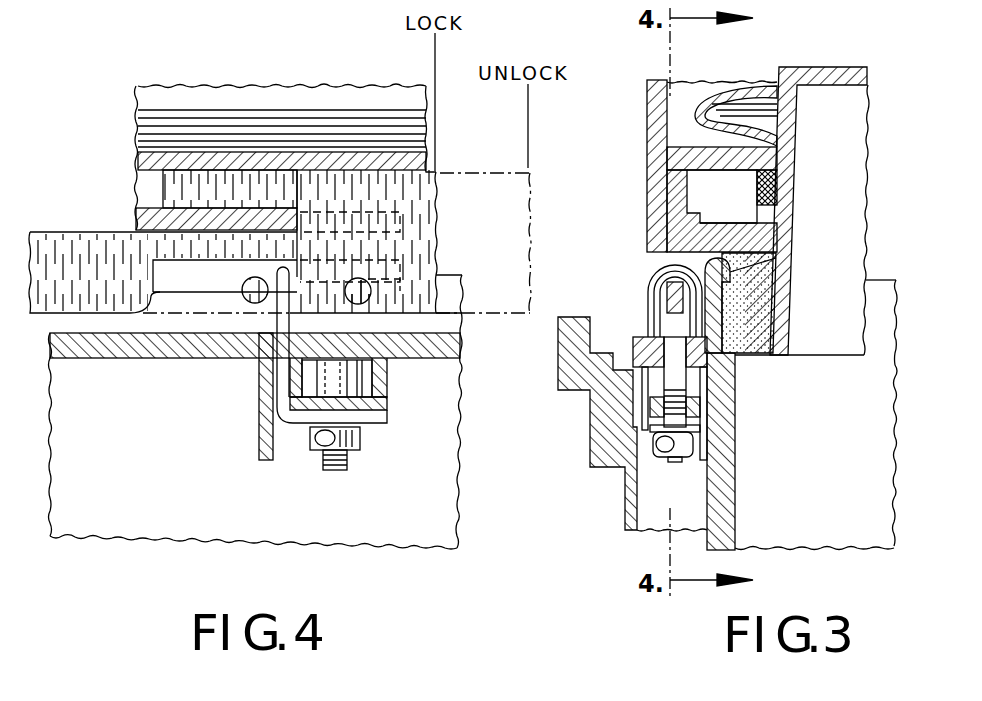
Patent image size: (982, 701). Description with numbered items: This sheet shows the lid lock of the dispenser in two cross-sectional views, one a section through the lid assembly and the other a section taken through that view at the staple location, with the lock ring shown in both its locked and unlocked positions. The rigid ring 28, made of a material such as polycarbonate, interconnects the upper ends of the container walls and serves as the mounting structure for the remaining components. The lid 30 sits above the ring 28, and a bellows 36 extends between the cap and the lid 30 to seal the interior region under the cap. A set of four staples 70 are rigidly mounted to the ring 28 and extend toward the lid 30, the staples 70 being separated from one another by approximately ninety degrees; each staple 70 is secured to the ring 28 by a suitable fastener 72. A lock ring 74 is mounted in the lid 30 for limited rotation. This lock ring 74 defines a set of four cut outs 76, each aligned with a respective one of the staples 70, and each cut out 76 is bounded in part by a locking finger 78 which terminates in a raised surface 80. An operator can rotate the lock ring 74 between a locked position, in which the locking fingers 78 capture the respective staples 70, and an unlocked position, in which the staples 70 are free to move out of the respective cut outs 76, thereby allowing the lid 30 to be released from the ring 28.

In FIG. 4, the rigid ring 28 is at (426, 360).
In FIG. 3, the rigid ring 28 is at (568, 366).
In FIG. 4, the lid 30 is at (216, 212).
In FIG. 3, the lid 30 is at (646, 160).
In FIG. 3, the bellows 36 is at (738, 92).
In FIG. 4, the staples 70 is at (372, 413).
In FIG. 3, the staples 70 is at (651, 272).
In FIG. 4, the fastener 72 is at (336, 462).
In FIG. 3, the fastener 72 is at (673, 467).
In FIG. 4, the lock ring 74 is at (85, 240).
In FIG. 3, the lock ring 74 is at (668, 198).
In FIG. 4, the cut outs 76 is at (172, 286).
In FIG. 4, the locking finger 78 is at (266, 281).
In FIG. 3, the locking finger 78 is at (668, 300).
In FIG. 4, the raised surface 80 is at (243, 274).